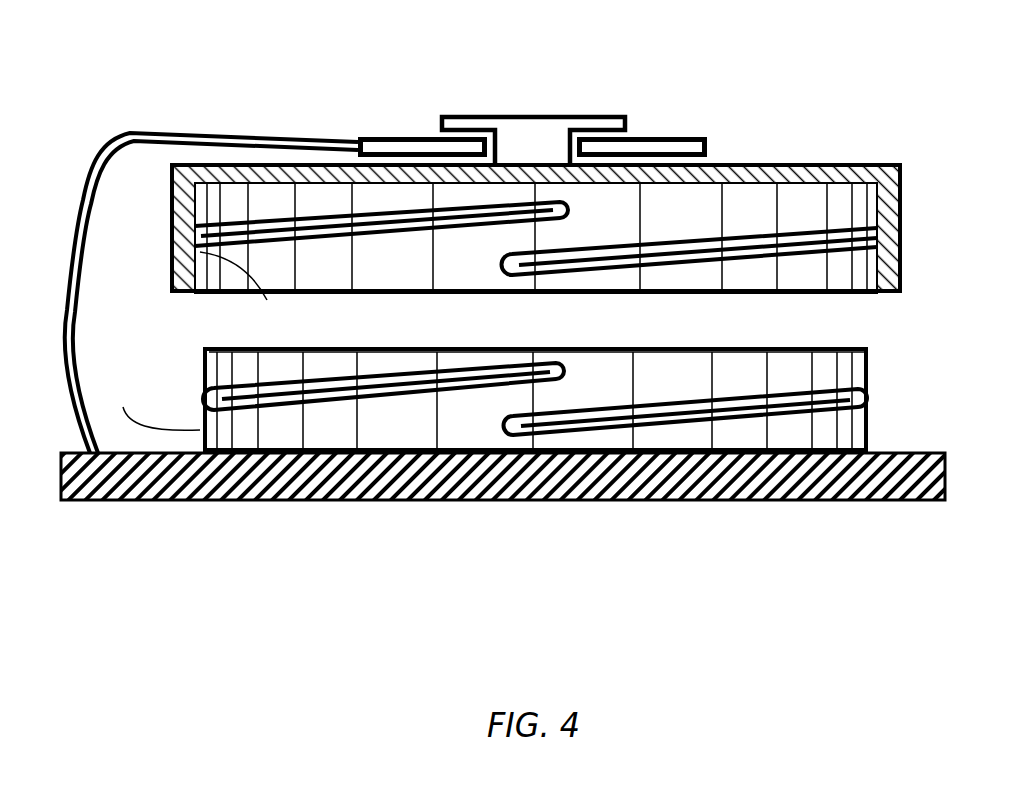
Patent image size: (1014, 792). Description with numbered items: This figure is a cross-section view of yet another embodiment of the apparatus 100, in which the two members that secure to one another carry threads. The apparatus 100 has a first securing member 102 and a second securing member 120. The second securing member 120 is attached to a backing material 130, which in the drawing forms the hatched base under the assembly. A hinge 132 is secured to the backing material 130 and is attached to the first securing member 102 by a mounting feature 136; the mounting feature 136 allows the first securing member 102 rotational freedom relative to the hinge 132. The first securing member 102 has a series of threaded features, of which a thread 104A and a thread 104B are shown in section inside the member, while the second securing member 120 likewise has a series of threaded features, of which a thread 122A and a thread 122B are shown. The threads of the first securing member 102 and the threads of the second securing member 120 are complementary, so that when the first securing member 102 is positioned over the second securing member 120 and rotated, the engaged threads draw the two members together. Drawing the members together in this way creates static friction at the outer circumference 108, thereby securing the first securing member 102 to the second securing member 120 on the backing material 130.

The apparatus 100 is at (218, 604).
The first securing member 102 is at (851, 143).
The thread 104A is at (388, 238).
The thread 104B is at (677, 258).
The outer circumference 108 is at (191, 341).
The second securing member 120 is at (888, 408).
The thread 122A is at (243, 385).
The thread 122B is at (673, 397).
The backing material 130 is at (560, 500).
The hinge 132 is at (93, 156).
The mounting feature 136 is at (532, 110).